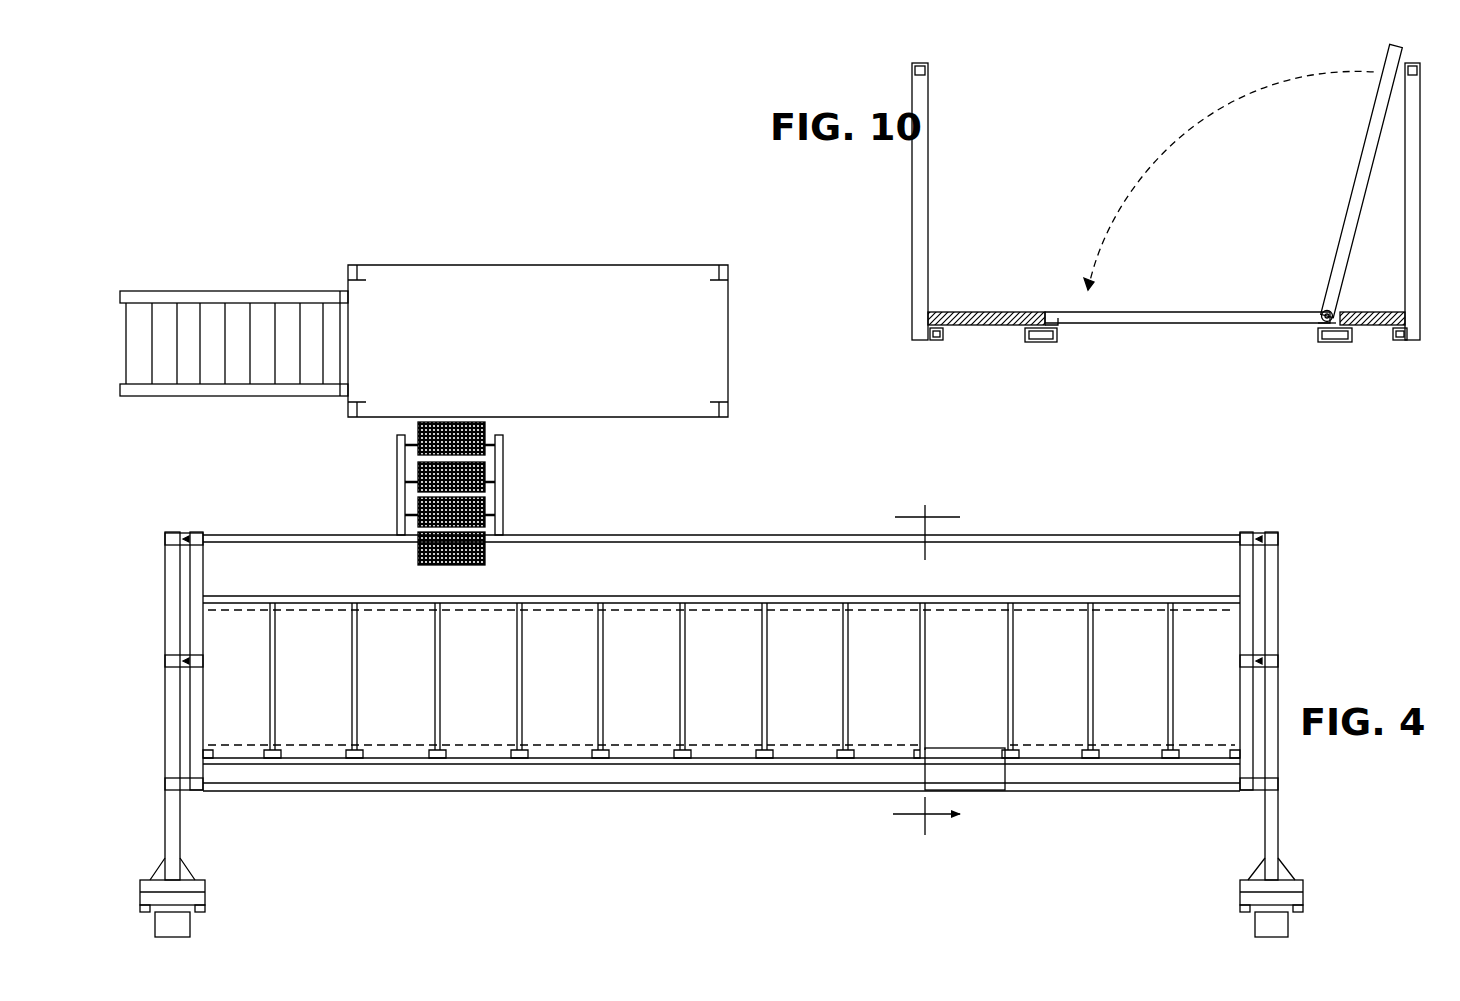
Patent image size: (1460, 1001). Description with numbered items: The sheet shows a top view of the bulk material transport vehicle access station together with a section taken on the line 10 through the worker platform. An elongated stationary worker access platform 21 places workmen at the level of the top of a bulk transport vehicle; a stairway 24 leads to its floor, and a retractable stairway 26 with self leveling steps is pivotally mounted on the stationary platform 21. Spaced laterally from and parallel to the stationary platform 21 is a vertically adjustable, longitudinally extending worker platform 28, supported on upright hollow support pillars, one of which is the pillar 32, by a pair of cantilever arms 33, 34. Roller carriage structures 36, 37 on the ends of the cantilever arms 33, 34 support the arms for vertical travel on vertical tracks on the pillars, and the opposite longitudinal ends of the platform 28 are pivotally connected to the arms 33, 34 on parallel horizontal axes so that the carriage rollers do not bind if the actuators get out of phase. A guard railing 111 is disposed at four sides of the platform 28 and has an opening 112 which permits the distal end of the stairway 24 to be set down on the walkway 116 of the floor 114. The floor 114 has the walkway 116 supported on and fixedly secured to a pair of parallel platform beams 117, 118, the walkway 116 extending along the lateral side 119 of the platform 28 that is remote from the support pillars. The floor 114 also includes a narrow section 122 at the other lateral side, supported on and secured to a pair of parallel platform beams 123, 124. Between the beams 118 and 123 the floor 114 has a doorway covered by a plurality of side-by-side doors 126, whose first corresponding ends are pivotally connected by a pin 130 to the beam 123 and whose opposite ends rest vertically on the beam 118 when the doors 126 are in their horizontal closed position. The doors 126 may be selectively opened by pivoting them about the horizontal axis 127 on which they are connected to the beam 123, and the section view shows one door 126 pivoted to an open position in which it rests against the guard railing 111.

In FIG. 4, the section line 10 is at (926, 674).
In FIG. 4, the stationary worker access platform 21 is at (568, 265).
In FIG. 4, the stairway 24 is at (318, 330).
In FIG. 4, the retractable stairway 26 is at (397, 480).
In FIG. 4, the worker platform 28 is at (770, 538).
In FIG. 4, the support pillar 32 is at (1272, 930).
In FIG. 4, the cantilever arm 33 is at (165, 742).
In FIG. 4, the cantilever arm 34 is at (1278, 618).
In FIG. 4, the roller carriage structure 36 is at (142, 893).
In FIG. 4, the roller carriage structure 37 is at (1310, 893).
In FIG. 4, the guard railing 111 is at (660, 538).
In FIG. 10, the guard railing 111 is at (912, 245).
In FIG. 4, the opening 112 is at (506, 535).
In FIG. 4, the floor 114 is at (1123, 618).
In FIG. 10, the floor 114 is at (1160, 312).
In FIG. 4, the walkway 116 is at (875, 556).
In FIG. 10, the walkway 116 is at (1000, 312).
In FIG. 10, the platform beam 117 is at (936, 340).
In FIG. 10, the platform beam 118 is at (1040, 342).
In FIG. 4, the lateral side 119 is at (1062, 535).
In FIG. 4, the narrow section 122 is at (492, 780).
In FIG. 10, the narrow section 122 is at (1388, 312).
In FIG. 10, the platform beam 123 is at (1340, 342).
In FIG. 10, the platform beam 124 is at (1400, 340).
In FIG. 4, the door 126 is at (352, 618).
In FIG. 10, the door 126 is at (1348, 200).
In FIG. 10, the horizontal axis 127 is at (1323, 309).
In FIG. 4, the pin 130 is at (680, 765).
In FIG. 10, the pin 130 is at (1318, 322).